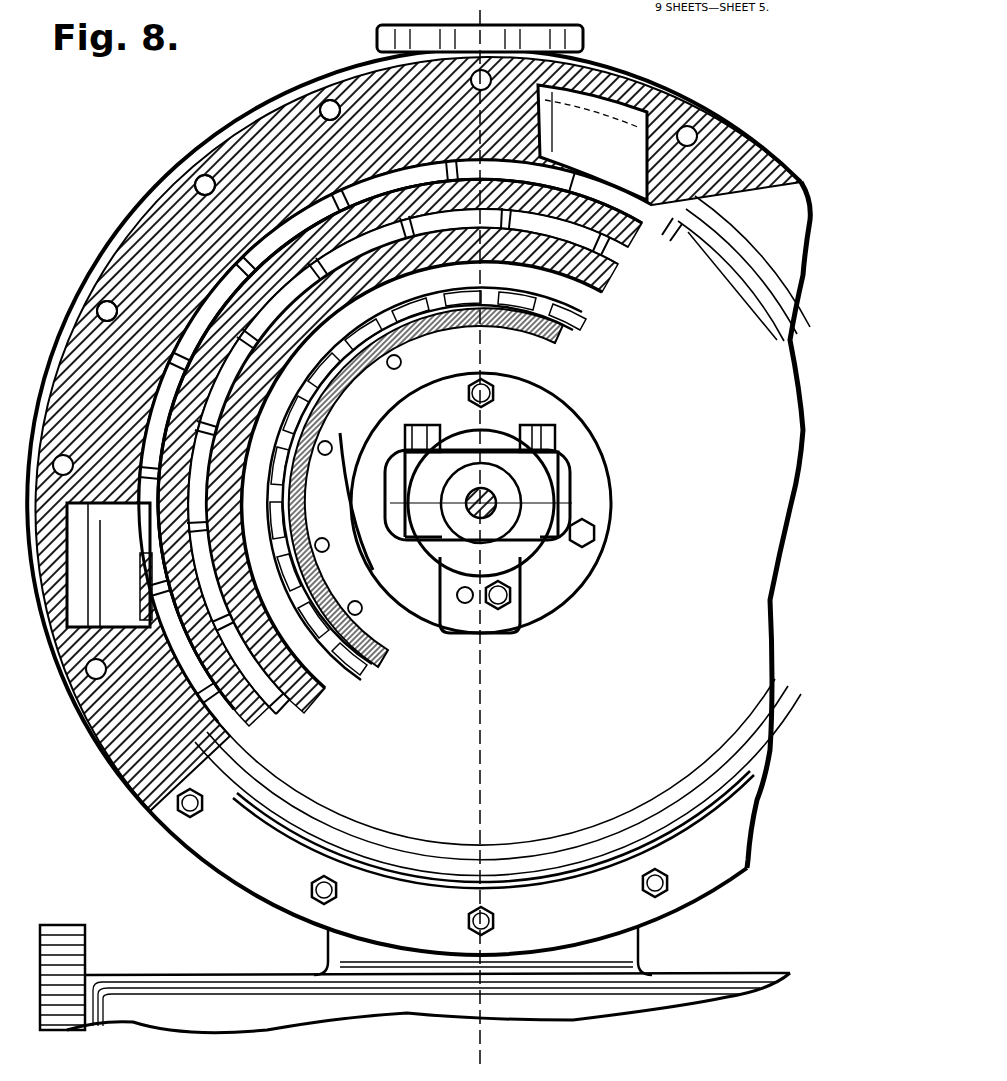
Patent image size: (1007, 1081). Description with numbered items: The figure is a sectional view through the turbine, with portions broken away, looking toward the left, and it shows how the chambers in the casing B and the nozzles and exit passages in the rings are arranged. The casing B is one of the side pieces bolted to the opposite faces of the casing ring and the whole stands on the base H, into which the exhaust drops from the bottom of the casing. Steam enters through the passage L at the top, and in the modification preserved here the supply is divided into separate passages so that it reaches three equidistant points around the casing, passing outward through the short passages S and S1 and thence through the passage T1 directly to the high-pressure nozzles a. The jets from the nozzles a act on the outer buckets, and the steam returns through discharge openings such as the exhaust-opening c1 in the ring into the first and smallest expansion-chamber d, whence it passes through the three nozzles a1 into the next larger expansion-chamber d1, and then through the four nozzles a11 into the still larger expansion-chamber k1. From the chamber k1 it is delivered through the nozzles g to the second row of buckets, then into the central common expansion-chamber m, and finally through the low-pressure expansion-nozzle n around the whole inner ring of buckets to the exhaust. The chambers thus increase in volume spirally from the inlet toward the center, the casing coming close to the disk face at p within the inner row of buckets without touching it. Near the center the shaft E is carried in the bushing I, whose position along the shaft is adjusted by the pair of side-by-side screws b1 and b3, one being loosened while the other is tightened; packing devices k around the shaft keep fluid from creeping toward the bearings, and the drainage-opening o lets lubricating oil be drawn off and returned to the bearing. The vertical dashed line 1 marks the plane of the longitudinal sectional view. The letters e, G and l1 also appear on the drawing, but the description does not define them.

The casing side piece B is at (126, 222).
The bushing I is at (648, 86).
The steam supply passage L is at (377, 40).
The short passage S is at (600, 116).
The short passage S1 is at (80, 539).
The passage T1 is at (66, 626).
The high-pressure nozzle a is at (580, 152).
The nozzle a1 is at (327, 96).
The nozzle a11 is at (100, 308).
The hatched ring e is at (455, 268).
The exhaust-opening c1 is at (262, 190).
The nozzle g is at (523, 197).
The casing approach point p is at (452, 276).
The packing device k is at (505, 272).
The central common expansion-chamber m is at (478, 316).
The low-pressure expansion-nozzle n is at (438, 322).
The drainage-opening o is at (358, 485).
The expansion-chamber d1 is at (192, 178).
The expansion-chamber d is at (610, 228).
The lever l1 is at (717, 286).
The expansion-chamber k1 is at (187, 450).
The hub G is at (550, 472).
The shaft E is at (477, 488).
The adjusting screw b1 is at (465, 604).
The adjusting screw b3 is at (498, 604).
The base H is at (215, 987).
The section line 1 is at (489, 535).